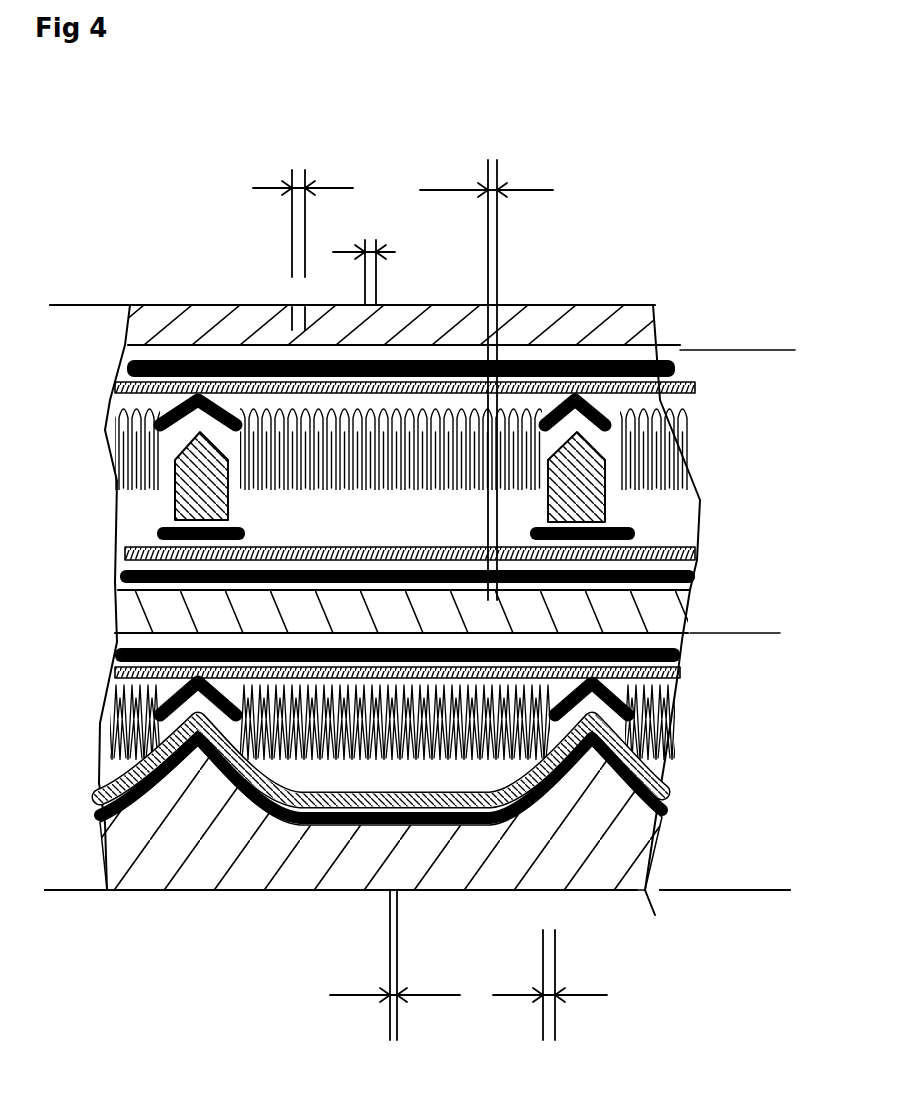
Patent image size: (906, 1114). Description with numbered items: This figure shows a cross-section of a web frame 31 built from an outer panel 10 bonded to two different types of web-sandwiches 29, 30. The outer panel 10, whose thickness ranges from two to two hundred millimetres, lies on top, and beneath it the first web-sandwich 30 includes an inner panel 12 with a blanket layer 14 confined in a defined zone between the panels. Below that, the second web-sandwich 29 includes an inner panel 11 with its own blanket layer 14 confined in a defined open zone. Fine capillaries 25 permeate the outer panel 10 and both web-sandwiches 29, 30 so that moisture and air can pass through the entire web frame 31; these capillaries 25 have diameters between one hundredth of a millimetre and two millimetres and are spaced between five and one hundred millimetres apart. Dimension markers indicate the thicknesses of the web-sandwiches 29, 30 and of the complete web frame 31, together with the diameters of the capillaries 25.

The outer panel 10 is at (176, 310).
The inner panel 11 is at (192, 881).
The inner panel 12 is at (645, 592).
The blanket layer 14 is at (527, 425).
The fine capillaries 25 is at (291, 313).
The web-sandwich 29 is at (765, 633).
The web-sandwich 30 is at (768, 350).
The web frame 31 is at (72, 875).